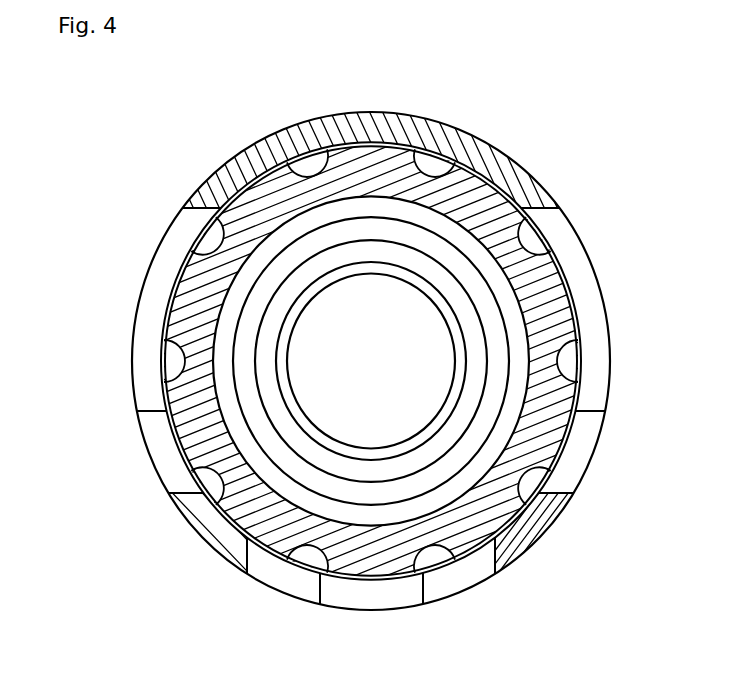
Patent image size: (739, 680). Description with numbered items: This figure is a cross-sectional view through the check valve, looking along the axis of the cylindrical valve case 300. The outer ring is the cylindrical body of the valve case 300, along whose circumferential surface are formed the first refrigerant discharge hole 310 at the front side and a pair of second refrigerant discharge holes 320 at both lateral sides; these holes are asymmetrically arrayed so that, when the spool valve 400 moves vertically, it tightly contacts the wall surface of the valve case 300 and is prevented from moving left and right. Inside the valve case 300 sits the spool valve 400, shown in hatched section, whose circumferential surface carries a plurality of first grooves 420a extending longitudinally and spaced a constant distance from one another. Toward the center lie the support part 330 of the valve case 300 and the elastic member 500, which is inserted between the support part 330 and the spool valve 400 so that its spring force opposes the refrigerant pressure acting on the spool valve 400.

The valve case 300 is at (457, 133).
The first refrigerant discharge hole 310 is at (302, 597).
The second refrigerant discharge holes 320 is at (132, 395).
The support part 330 is at (365, 270).
The spool valve 400 is at (242, 513).
The first grooves 420a is at (303, 155).
The elastic member 500 is at (438, 273).